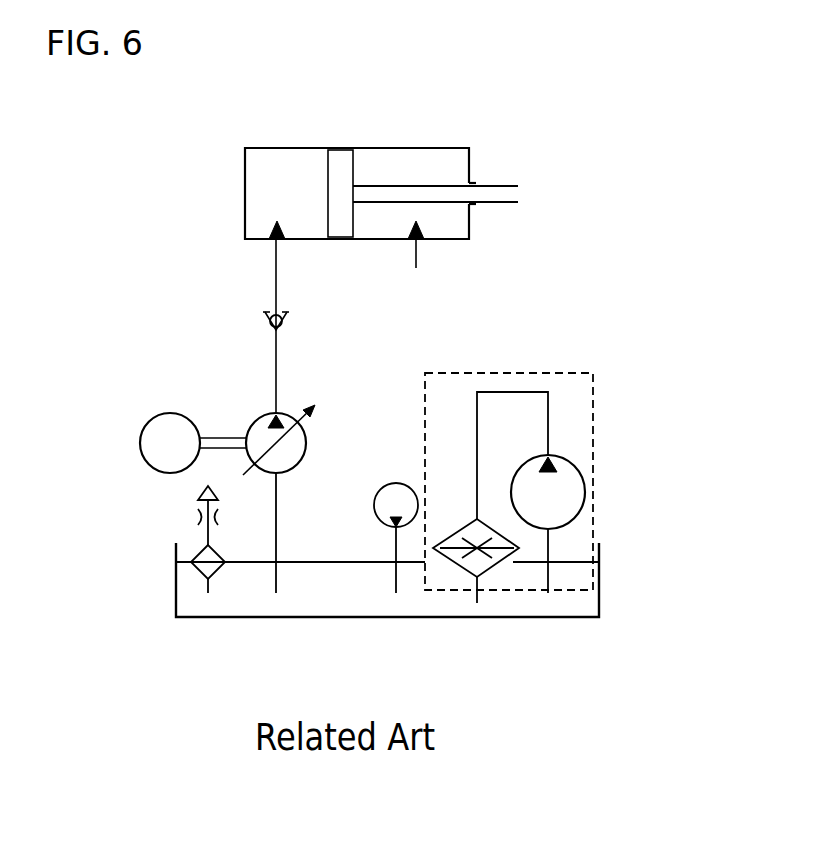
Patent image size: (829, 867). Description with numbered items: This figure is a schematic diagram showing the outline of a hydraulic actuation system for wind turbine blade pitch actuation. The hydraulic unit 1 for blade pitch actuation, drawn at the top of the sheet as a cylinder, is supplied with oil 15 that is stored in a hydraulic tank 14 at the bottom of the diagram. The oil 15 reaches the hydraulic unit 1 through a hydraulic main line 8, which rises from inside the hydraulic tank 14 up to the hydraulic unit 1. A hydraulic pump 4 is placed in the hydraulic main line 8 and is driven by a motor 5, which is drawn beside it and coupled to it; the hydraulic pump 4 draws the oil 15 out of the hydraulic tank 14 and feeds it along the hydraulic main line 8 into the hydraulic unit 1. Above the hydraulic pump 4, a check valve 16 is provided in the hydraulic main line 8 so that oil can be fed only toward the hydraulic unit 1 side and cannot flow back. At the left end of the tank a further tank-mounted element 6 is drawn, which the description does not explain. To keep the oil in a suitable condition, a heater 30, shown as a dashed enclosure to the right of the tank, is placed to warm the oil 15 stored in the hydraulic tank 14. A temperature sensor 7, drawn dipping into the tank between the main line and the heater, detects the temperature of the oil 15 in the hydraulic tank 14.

The hydraulic unit 1 is at (315, 148).
The check valve 16 is at (289, 322).
The hydraulic pump 4 is at (255, 423).
The motor 5 is at (142, 425).
The air breather filter 6 is at (198, 518).
The temperature sensor 7 is at (395, 483).
The hydraulic main line 8 is at (278, 500).
The hydraulic tank 14 is at (176, 595).
The oil 15 is at (347, 595).
The heater 30 is at (593, 404).